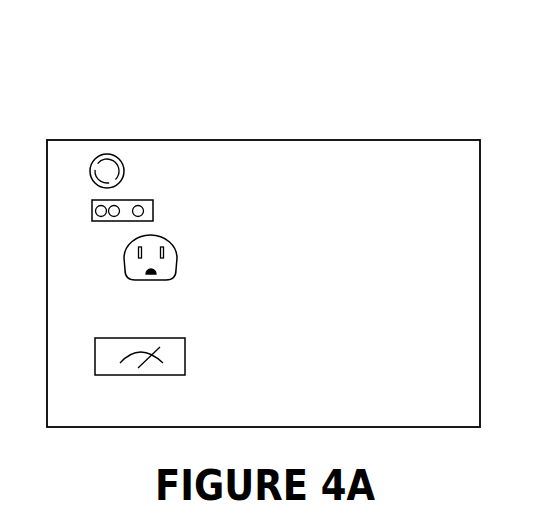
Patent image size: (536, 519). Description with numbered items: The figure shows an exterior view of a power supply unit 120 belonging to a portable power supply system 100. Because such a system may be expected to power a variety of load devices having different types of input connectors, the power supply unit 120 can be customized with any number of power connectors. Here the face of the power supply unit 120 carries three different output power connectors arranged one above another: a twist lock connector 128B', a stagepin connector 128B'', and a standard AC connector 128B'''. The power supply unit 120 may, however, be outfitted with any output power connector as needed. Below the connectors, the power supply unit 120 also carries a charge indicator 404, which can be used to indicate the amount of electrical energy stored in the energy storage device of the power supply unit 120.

The portable power supply system 100 is at (176, 97).
The power supply unit 120 is at (333, 140).
The L5-20 twist lock connector 128B' is at (145, 168).
The stagepin connector 128B'' is at (162, 201).
The standard AC connector 128B''' is at (190, 248).
The charge indicator 404 is at (140, 338).